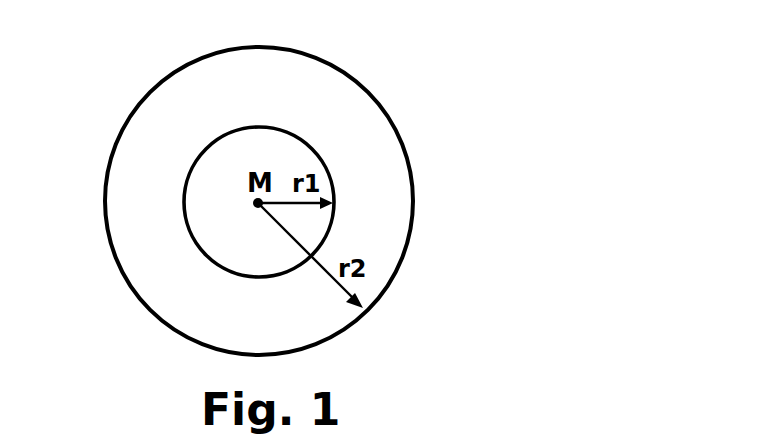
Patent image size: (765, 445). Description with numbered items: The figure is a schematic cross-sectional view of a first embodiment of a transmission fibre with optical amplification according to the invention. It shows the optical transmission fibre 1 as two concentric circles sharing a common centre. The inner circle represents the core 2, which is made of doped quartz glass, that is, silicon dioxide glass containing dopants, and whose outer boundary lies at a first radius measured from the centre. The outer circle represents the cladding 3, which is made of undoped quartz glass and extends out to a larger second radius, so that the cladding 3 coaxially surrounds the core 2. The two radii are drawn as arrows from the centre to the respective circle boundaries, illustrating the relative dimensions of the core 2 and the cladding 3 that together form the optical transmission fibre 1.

The optical transmission fibre 1 is at (300, 183).
The core 2 is at (196, 245).
The cladding 3 is at (259, 179).